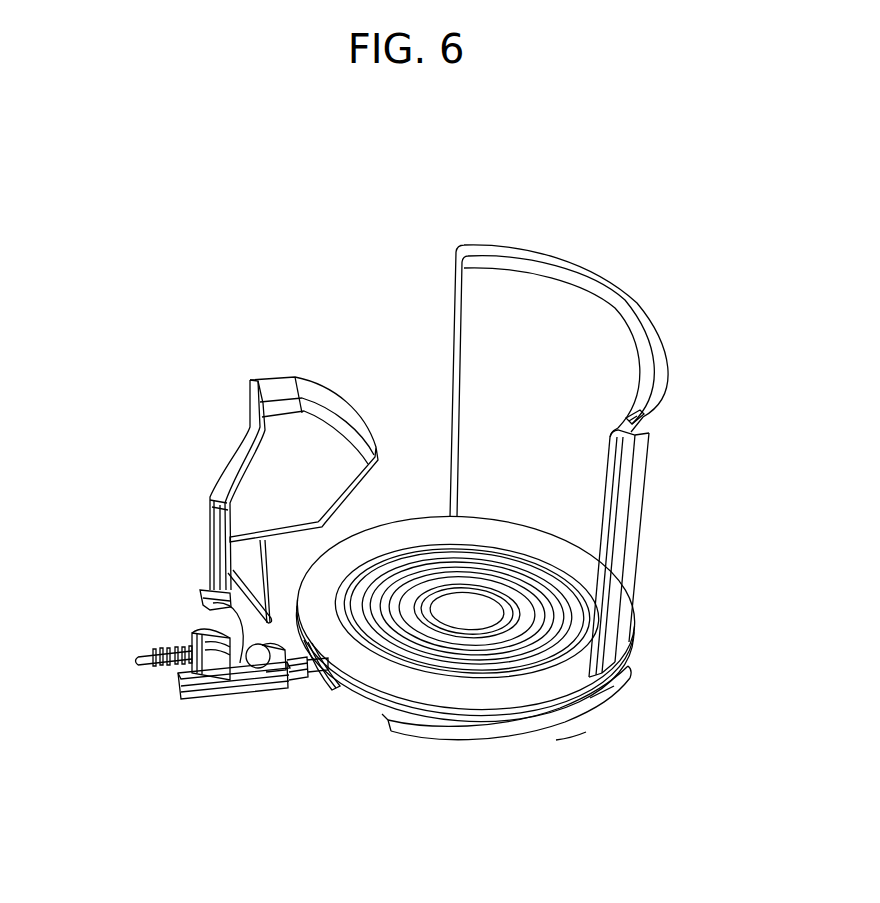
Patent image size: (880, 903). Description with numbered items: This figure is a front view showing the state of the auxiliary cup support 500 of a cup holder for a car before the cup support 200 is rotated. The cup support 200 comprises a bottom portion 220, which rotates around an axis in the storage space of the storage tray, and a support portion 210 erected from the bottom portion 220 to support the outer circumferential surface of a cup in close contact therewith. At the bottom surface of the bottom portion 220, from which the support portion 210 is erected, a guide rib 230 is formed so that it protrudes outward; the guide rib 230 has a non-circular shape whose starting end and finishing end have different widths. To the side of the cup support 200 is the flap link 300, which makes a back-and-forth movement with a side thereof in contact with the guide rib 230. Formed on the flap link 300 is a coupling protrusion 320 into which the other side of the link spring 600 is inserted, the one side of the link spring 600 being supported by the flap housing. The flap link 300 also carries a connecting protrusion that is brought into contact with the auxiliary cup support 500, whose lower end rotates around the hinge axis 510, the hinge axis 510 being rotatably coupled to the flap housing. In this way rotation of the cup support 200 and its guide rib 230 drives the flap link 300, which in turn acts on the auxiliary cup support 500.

The cup support 200 is at (541, 214).
The support portion 210 is at (572, 337).
The bottom portion 220 is at (453, 697).
The guide rib 230 is at (573, 718).
The auxiliary cup support 500 is at (303, 427).
The hinge axis 510 is at (261, 697).
The link spring 600 is at (185, 656).
The coupling protrusion 320 is at (140, 668).
The flap link 300 is at (205, 700).